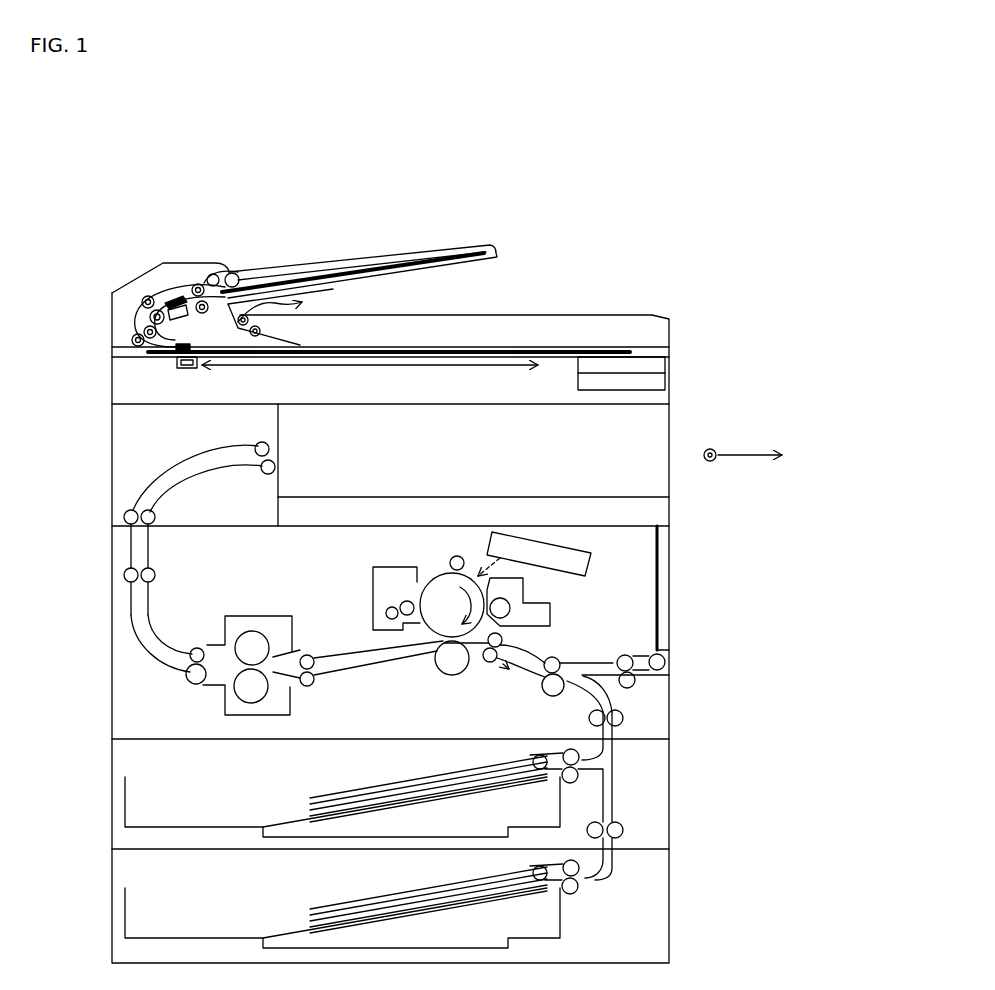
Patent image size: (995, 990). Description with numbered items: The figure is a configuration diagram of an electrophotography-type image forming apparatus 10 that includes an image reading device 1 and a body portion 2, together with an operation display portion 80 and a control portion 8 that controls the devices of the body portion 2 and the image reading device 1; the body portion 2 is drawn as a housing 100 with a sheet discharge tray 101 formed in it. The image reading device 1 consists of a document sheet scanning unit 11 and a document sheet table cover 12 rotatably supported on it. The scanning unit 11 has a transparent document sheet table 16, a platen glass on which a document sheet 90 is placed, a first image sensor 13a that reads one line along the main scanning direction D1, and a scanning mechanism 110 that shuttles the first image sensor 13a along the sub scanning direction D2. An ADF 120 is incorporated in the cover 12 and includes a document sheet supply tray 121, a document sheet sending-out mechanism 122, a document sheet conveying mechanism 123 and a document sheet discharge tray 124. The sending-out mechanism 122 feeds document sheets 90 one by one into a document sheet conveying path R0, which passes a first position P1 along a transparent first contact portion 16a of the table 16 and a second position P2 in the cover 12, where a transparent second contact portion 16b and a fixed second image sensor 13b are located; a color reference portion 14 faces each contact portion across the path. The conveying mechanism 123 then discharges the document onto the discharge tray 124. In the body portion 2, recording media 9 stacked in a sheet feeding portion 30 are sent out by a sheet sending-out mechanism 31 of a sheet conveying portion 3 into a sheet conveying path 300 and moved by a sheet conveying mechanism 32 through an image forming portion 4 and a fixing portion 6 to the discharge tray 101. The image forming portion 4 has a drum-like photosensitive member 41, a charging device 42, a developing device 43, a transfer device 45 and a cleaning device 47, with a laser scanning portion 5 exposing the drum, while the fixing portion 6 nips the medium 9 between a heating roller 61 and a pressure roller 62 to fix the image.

The image reading device 1 is at (38, 343).
The body portion 2 is at (680, 570).
The sheet conveying portion 3 is at (660, 825).
The image forming portion 4 is at (343, 600).
The laser scanning portion 5 is at (588, 568).
The fixing portion 6 is at (205, 694).
The control portion 8 is at (666, 381).
The recording medium 9 is at (375, 795).
The image forming apparatus 10 is at (683, 255).
The document sheet scanning unit 11 is at (108, 378).
The document sheet table cover 12 is at (108, 330).
The first image sensor 13a is at (186, 405).
The second image sensor 13b is at (145, 311).
The color reference portion 14 is at (166, 309).
The document sheet table 16 is at (545, 362).
The first contact portion 16a is at (186, 369).
The second contact portion 16b is at (143, 325).
The sheet feeding portion 30 is at (122, 778).
The sheet sending-out mechanism 31 is at (580, 790).
The sheet conveying mechanism 32 is at (258, 444).
The photosensitive member 41 is at (424, 580).
The charging device 42 is at (476, 553).
The developing device 43 is at (535, 598).
The transfer device 45 is at (450, 677).
The cleaning device 47 is at (396, 567).
The heating roller 61 is at (238, 634).
The pressure roller 62 is at (270, 690).
The operation display portion 80 is at (666, 363).
The document sheet 90 is at (390, 262).
The apparatus body 100 is at (111, 575).
The sheet discharge tray 101 is at (490, 498).
The scanning mechanism 110 is at (203, 368).
The ADF 120 is at (108, 308).
The document sheet supply tray 121 is at (499, 252).
The document sheet sending-out mechanism 122 is at (226, 275).
The document sheet conveying mechanism 123 is at (203, 288).
The document sheet discharge tray 124 is at (420, 315).
The sheet conveying path 300 is at (530, 678).
The first position P1 is at (236, 340).
The second position P2 is at (180, 300).
The document sheet conveying path R0 is at (140, 317).
The main scanning direction D1 is at (712, 468).
The sub scanning direction D2 is at (766, 456).